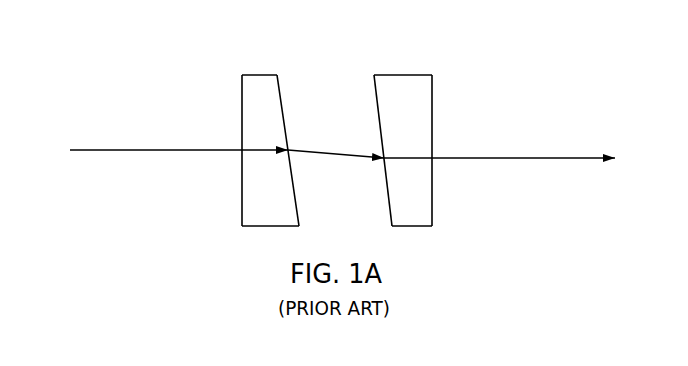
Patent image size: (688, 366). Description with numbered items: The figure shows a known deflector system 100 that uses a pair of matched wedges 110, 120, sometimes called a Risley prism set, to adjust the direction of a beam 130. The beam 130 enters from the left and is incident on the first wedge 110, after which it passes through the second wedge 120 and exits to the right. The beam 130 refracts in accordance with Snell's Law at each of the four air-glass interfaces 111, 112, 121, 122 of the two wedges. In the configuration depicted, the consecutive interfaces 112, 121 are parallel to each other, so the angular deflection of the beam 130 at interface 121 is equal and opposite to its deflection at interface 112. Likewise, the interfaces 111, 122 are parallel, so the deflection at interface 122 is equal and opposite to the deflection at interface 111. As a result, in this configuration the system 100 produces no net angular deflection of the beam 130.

The deflector system 100 is at (221, 32).
The wedge 110 is at (260, 150).
The air-glass interface 111 is at (240, 132).
The air-glass interface 112 is at (288, 132).
The wedge 120 is at (415, 150).
The air-glass interface 121 is at (385, 170).
The air-glass interface 122 is at (433, 132).
The beam 130 is at (108, 150).